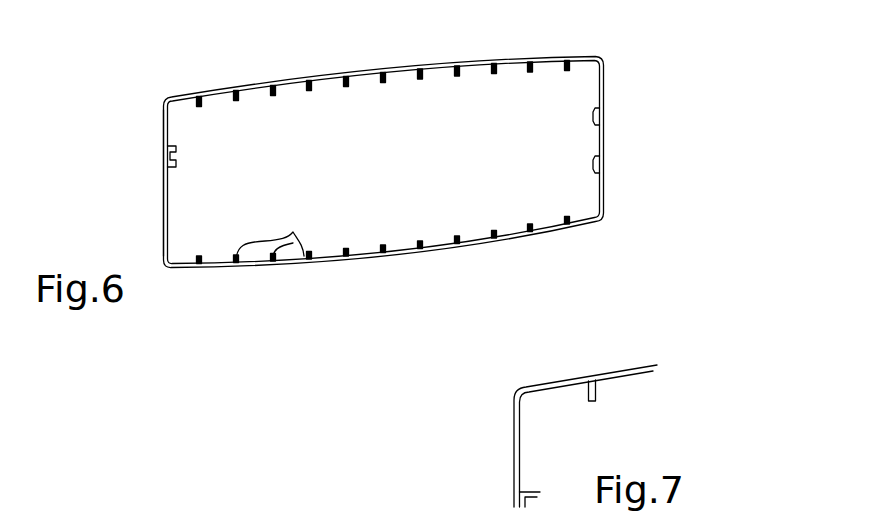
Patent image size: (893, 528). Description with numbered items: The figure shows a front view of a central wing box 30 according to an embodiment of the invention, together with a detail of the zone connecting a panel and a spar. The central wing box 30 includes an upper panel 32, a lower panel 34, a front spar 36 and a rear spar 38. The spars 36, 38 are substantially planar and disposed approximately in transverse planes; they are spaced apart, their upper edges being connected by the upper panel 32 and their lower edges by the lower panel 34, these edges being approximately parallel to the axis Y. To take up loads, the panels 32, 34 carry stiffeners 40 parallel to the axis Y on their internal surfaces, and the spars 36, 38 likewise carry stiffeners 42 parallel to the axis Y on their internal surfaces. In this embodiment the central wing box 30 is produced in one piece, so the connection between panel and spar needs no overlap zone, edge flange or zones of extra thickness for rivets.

In FIG. 6, the central wing box 30 is at (607, 224).
In FIG. 6, the upper panel 32 is at (325, 72).
In FIG. 7, the upper panel 32 is at (638, 366).
In FIG. 6, the lower panel 34 is at (343, 259).
In FIG. 6, the front spar 36 is at (163, 184).
In FIG. 7, the front spar 36 is at (514, 453).
In FIG. 6, the rear spar 38 is at (604, 163).
In FIG. 6, the stiffeners 40 is at (294, 235).
In FIG. 6, the stiffeners 42 is at (172, 147).